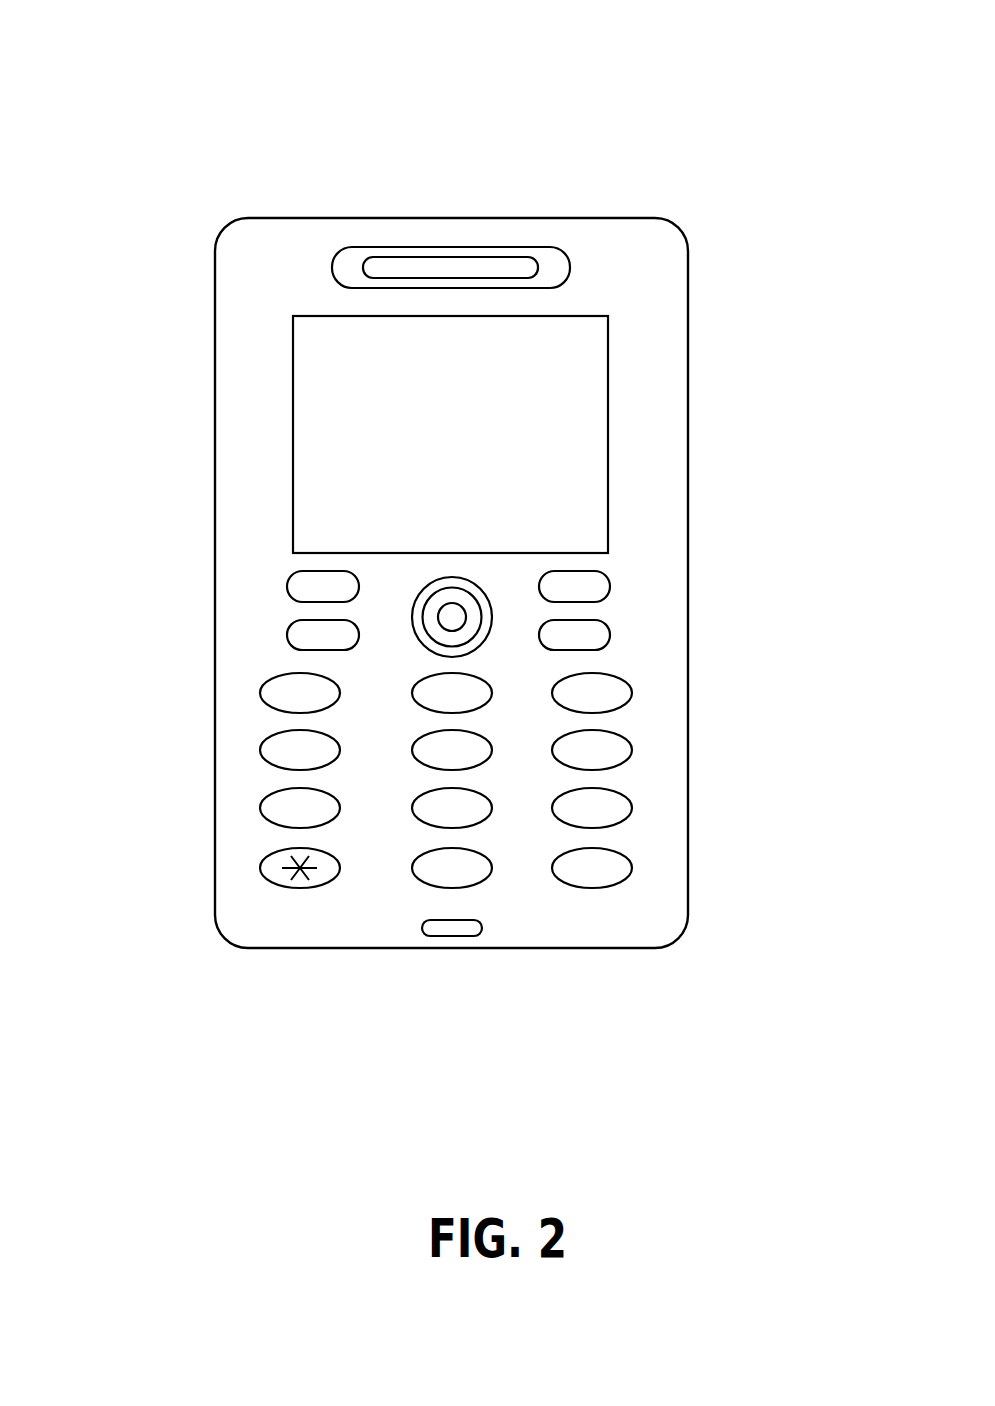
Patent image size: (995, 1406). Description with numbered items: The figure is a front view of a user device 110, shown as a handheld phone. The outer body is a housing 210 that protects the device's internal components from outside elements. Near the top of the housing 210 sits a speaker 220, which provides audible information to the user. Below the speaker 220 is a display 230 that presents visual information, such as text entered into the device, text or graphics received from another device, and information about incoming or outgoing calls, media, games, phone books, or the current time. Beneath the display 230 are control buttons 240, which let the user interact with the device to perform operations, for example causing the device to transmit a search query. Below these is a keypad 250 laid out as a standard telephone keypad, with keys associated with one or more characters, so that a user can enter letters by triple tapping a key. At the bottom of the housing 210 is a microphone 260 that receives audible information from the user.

The user device 110 is at (147, 55).
The housing 210 is at (215, 580).
The speaker 220 is at (450, 247).
The display 230 is at (610, 435).
The control buttons 240 is at (628, 563).
The keypad 250 is at (652, 890).
The microphone 260 is at (453, 936).